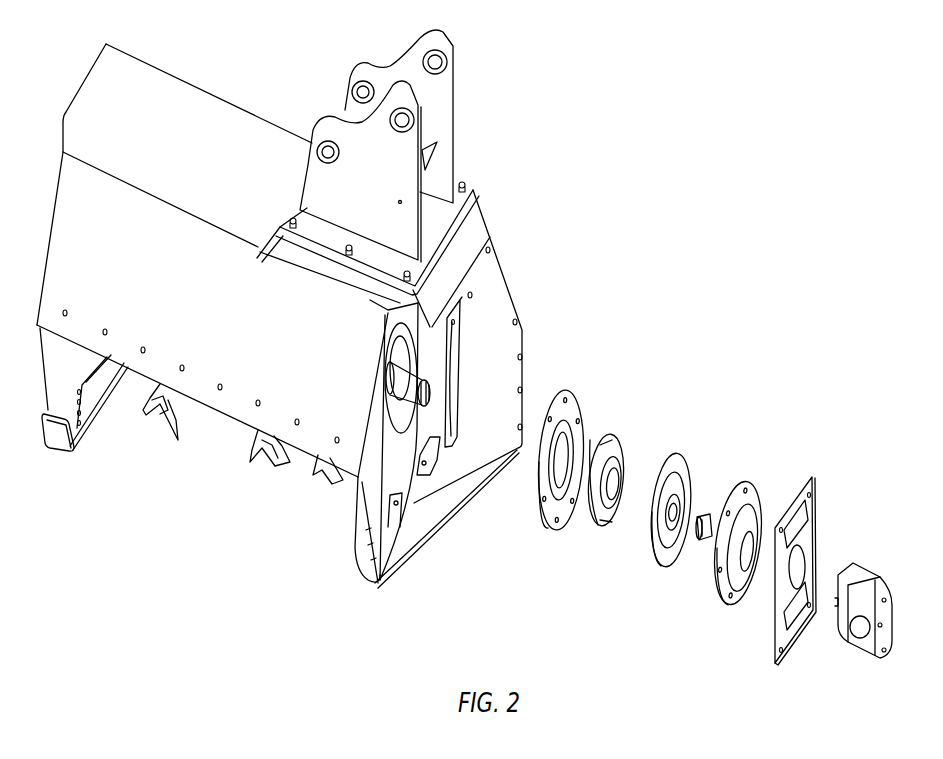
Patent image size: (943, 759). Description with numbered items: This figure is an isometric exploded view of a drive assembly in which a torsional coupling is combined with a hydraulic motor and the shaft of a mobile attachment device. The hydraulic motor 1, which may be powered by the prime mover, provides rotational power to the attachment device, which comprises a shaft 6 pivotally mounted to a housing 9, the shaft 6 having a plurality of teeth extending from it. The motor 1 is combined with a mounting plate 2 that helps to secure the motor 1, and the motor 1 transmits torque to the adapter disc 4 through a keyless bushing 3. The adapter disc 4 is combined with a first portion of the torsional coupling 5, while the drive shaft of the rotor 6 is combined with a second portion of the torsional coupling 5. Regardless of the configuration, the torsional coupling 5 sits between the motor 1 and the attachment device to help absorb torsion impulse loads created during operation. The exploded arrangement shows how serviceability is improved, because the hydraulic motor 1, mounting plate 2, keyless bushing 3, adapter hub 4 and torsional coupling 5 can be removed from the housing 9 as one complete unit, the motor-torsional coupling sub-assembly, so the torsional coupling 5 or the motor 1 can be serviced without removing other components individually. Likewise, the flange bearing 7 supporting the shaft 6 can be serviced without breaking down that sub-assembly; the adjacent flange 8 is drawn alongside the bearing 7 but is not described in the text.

The hydraulic motor 1 is at (870, 567).
The mounting plate 2 is at (812, 477).
The keyless bushing 3 is at (697, 540).
The adapter disc 4 is at (745, 482).
The torsional coupling 5 is at (675, 453).
The shaft 6 is at (405, 520).
The flange bearing 7 is at (588, 517).
The flange 8 is at (563, 390).
The housing 9 is at (355, 567).